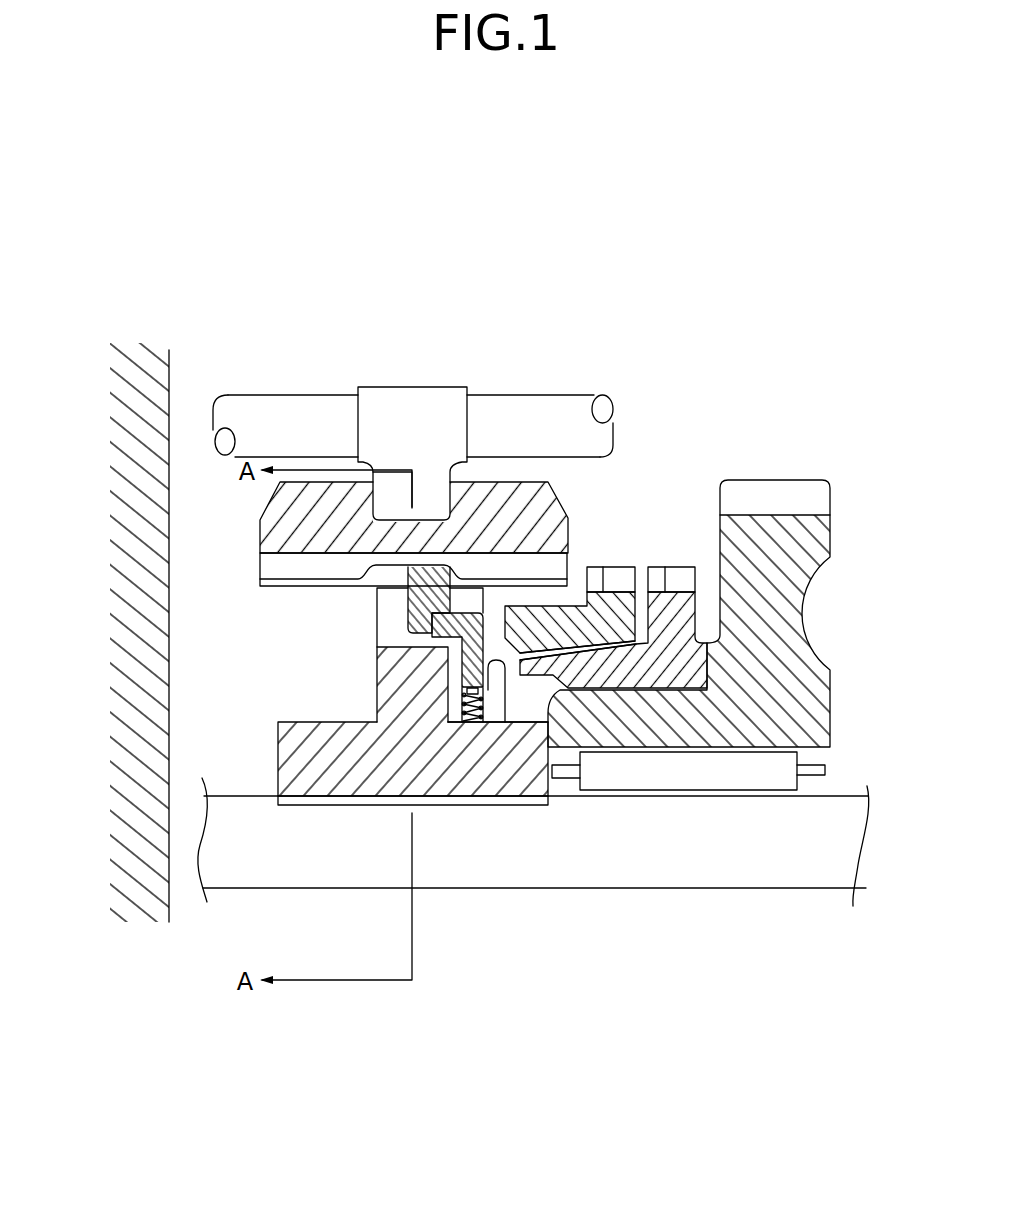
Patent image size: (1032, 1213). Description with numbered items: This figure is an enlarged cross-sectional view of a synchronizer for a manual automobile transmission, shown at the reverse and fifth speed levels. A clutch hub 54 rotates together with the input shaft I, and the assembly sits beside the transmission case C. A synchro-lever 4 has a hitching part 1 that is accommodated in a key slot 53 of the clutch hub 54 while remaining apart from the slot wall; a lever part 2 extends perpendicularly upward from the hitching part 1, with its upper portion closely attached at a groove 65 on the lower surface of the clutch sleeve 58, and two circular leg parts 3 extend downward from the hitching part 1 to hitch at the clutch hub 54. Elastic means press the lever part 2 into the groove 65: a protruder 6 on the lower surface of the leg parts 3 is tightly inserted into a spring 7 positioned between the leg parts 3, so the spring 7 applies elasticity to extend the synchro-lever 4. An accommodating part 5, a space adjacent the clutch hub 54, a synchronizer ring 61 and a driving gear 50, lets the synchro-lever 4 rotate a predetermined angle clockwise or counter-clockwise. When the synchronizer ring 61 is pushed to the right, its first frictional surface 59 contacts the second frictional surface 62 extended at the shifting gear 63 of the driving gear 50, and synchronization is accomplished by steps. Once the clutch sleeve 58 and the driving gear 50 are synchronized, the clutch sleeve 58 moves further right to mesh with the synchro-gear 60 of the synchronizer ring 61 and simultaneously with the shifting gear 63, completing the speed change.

The hitching part 1 is at (435, 650).
The lever part 2 is at (405, 579).
The leg parts 3 is at (505, 706).
The synchro-lever 4 is at (490, 601).
The accommodating part 5 is at (535, 697).
The protruder 6 is at (472, 724).
The springs 7 is at (483, 706).
The driving gear 50 is at (790, 548).
The key slot 53 is at (395, 647).
The clutch hub 54 is at (328, 722).
The clutch sleeve 58 is at (327, 513).
The first frictional surface 59 is at (633, 690).
The synchro-gear 60 is at (622, 577).
The synchronizer ring 61 is at (612, 618).
The second frictional surface 62 is at (567, 647).
The shifting gear 63 is at (678, 575).
The groove 65 is at (461, 603).
The transmission case C is at (130, 626).
The input shaft I is at (812, 858).